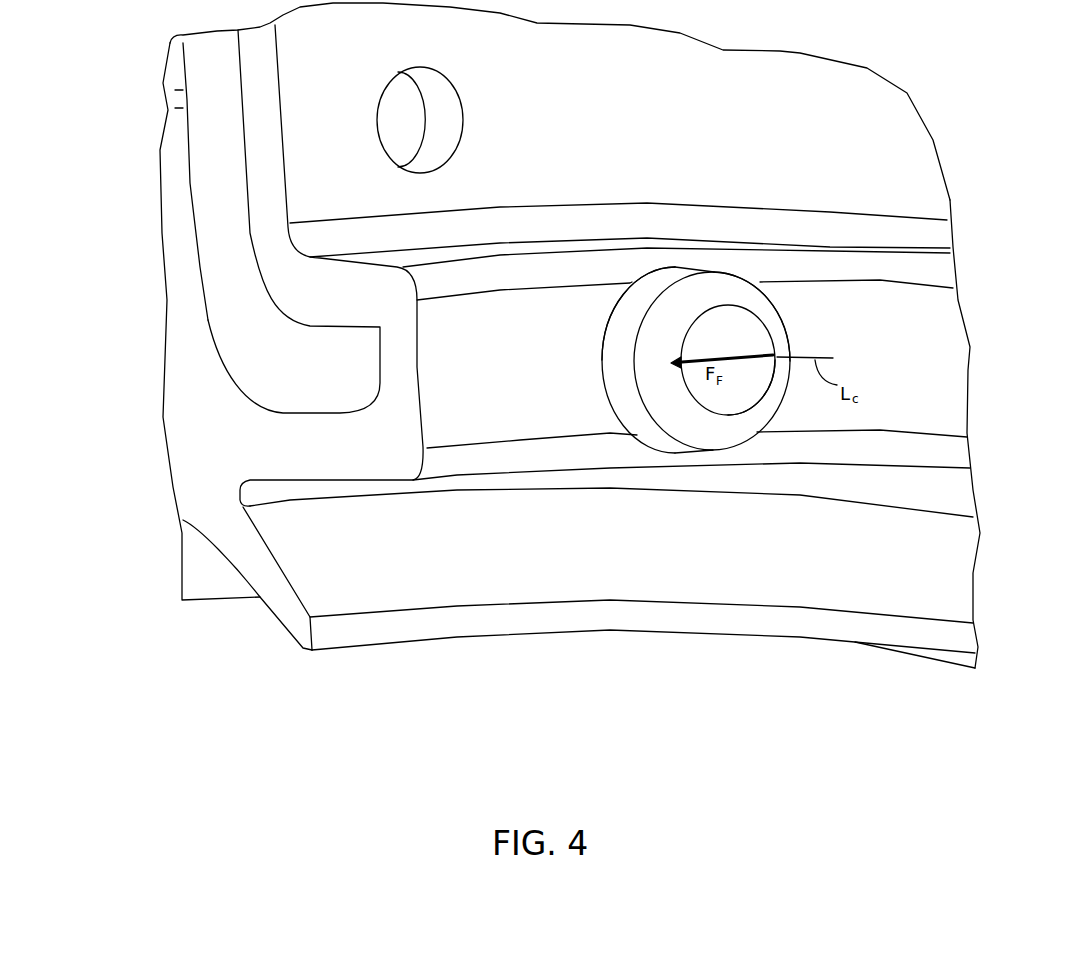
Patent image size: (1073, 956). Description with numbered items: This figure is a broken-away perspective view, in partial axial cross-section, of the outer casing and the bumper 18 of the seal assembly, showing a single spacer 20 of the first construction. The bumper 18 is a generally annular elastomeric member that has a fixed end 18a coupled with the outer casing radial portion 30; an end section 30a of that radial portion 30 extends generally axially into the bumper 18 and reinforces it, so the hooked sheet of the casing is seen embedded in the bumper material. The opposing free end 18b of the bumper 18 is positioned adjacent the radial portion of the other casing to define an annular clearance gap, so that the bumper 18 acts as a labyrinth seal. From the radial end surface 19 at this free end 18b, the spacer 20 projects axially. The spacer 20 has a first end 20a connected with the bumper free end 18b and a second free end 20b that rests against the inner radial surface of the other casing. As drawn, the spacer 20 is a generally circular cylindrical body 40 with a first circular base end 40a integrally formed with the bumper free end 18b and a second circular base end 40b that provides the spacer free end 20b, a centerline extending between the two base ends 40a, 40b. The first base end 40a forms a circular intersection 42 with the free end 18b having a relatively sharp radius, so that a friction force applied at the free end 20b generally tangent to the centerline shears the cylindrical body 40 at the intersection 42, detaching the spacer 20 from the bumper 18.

The bumper 18 is at (882, 220).
The fixed end 18a is at (668, 208).
The free end 18b is at (932, 322).
The radial end surface 19 is at (920, 383).
The spacer 20 is at (747, 255).
The first end 20a is at (638, 270).
The second free end 20b is at (765, 395).
The outer casing radial portion 30 is at (196, 182).
The end section 30a is at (313, 383).
The cylindrical body 40 is at (685, 408).
The first circular base end 40a is at (615, 333).
The second circular base end 40b is at (752, 335).
The circular intersection 42 is at (602, 373).